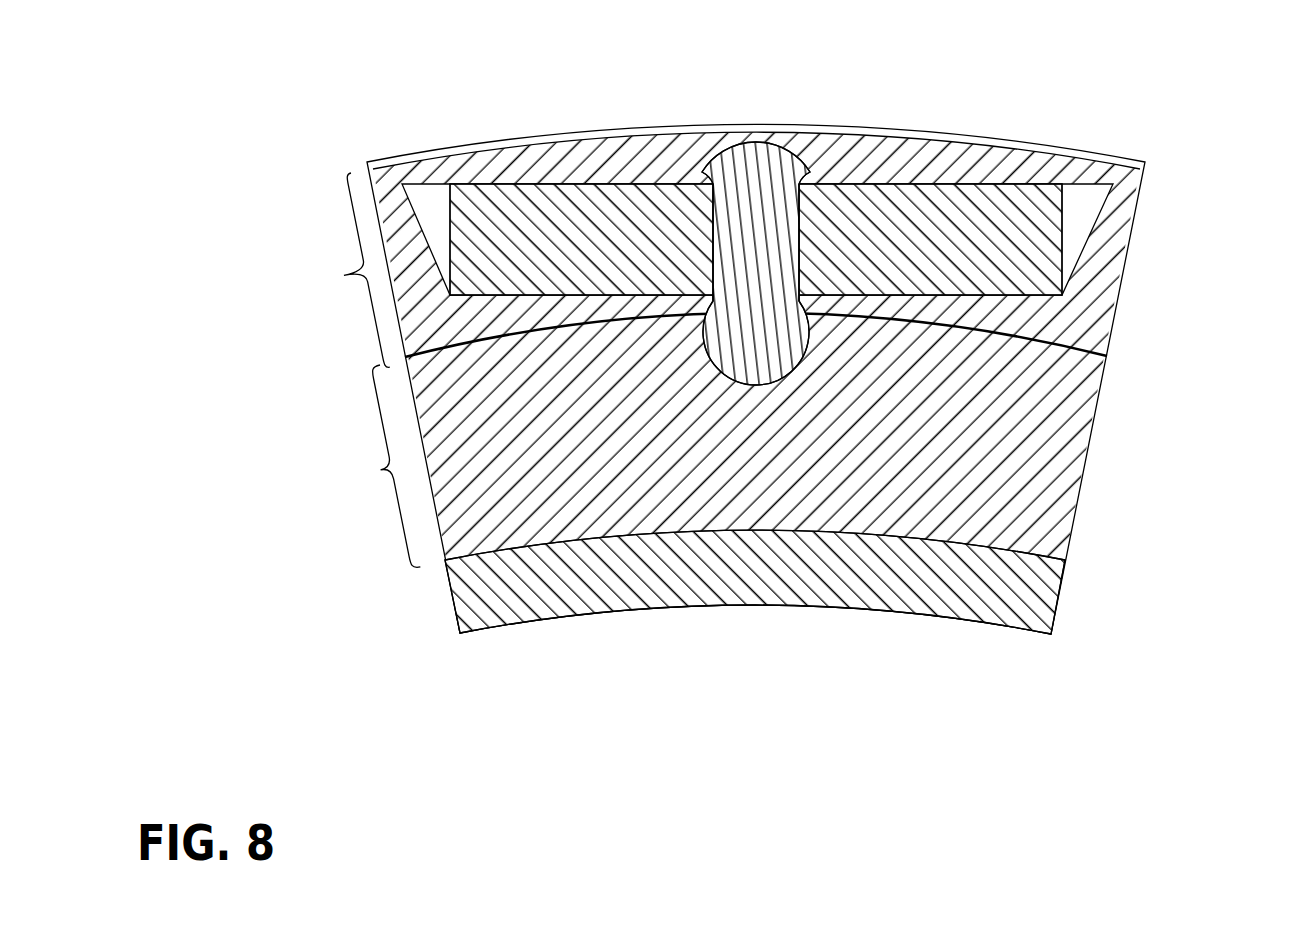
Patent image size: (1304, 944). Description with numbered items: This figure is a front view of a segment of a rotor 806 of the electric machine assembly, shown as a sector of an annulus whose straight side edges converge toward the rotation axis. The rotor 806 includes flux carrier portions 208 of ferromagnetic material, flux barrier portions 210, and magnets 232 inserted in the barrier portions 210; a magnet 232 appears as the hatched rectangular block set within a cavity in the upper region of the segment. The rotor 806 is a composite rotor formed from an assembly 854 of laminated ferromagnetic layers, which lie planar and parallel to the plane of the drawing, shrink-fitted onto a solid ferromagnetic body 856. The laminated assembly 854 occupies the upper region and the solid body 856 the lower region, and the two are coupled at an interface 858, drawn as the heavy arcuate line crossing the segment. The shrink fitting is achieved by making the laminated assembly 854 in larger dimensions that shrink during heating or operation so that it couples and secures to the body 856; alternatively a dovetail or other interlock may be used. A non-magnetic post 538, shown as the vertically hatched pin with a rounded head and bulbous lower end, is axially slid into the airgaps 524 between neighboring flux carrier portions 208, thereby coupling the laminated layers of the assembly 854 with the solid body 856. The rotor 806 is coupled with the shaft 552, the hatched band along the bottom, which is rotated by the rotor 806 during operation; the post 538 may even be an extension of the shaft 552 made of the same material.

The rotor 806 is at (792, 333).
The flux carrier portions 208 is at (553, 172).
The flux barrier portions 210 is at (879, 174).
The magnets 232 is at (995, 200).
The non-magnetic post 538 is at (725, 163).
The airgaps 524 is at (709, 265).
The assembly of laminated ferromagnetic portions 854 is at (700, 272).
The solid ferromagnetic body 856 is at (371, 468).
The interface 858 is at (1017, 345).
The shaft 552 is at (1018, 602).